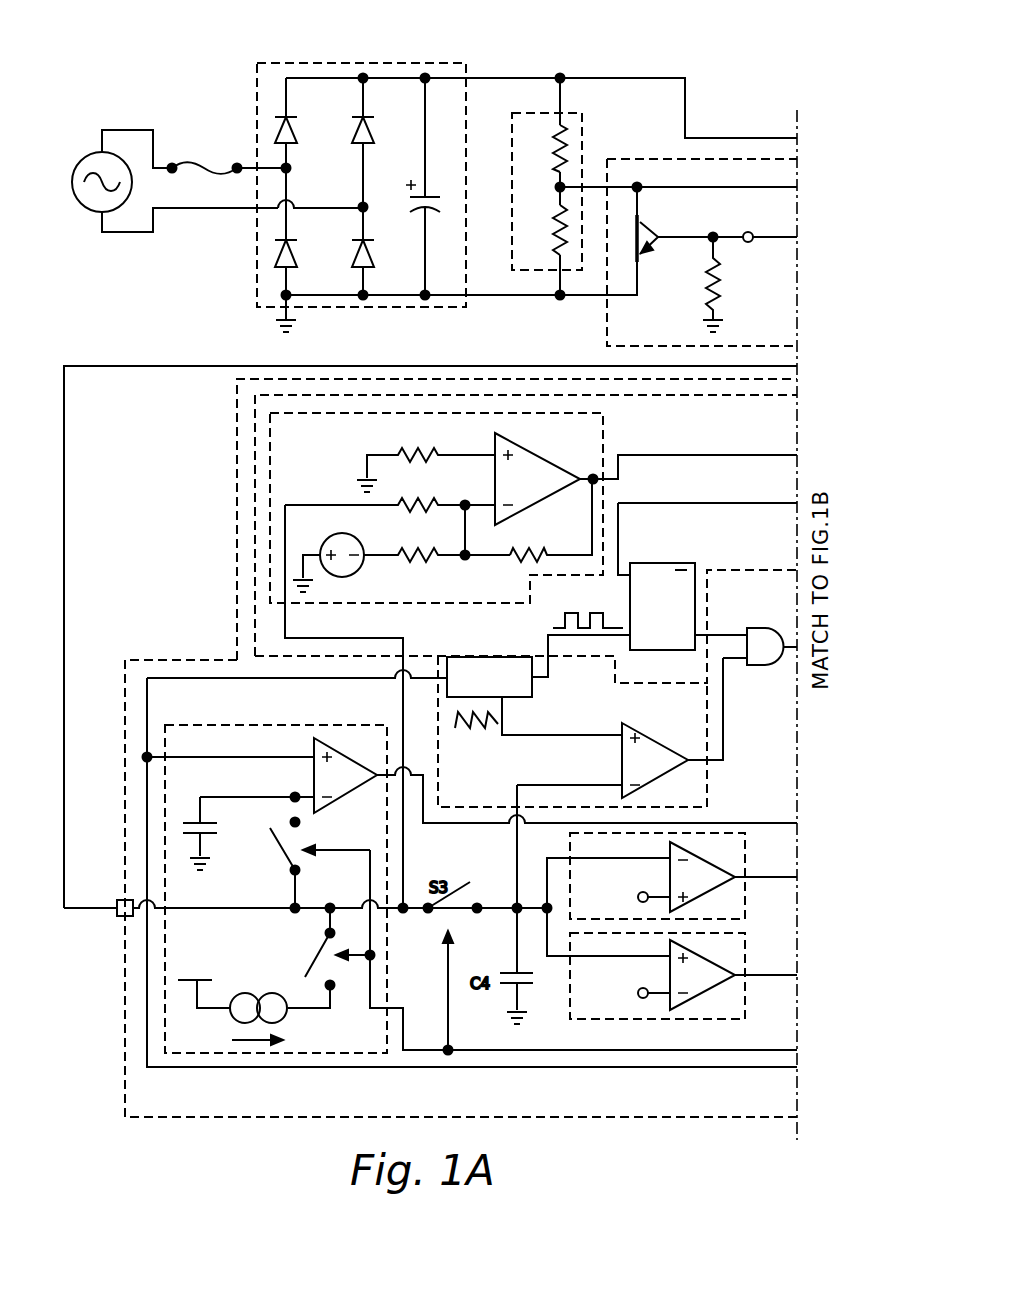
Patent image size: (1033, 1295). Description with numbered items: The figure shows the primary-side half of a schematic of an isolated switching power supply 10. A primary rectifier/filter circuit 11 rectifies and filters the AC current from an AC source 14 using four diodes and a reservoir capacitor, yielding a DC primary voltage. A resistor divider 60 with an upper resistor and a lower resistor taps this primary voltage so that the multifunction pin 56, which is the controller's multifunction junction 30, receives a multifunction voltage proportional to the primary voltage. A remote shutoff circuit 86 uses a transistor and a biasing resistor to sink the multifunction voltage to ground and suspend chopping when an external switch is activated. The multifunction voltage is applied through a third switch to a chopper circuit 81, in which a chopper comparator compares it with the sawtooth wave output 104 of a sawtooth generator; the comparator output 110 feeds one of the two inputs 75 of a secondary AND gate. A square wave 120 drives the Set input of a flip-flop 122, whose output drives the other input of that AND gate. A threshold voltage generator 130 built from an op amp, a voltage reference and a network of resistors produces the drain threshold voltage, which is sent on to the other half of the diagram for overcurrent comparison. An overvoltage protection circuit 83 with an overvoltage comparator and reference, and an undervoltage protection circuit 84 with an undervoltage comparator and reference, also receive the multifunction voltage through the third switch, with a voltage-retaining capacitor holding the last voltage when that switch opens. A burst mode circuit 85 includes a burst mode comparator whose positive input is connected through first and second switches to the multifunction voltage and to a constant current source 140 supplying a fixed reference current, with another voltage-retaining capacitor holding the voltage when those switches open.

The switching power supply 10 is at (146, 58).
The primary rectifier/filter circuit 11 is at (255, 102).
The AC source 14 is at (84, 159).
The resistor divider 60 is at (532, 112).
The remote shutoff circuit 86 is at (607, 318).
The threshold voltage generator 130 is at (603, 425).
The flip-flop 122 is at (662, 563).
The square wave 120 is at (600, 614).
The inputs of secondary AND gate A2 75 is at (728, 636).
The output of chopper comparator CR1 110 is at (698, 747).
The chopper circuit 81 is at (707, 779).
The sawtooth wave output 104 is at (470, 722).
The burst mode circuit 85 is at (229, 725).
The overvoltage protection circuit 83 is at (745, 861).
The undervoltage protection circuit 84 is at (745, 959).
The constant current source 140 is at (282, 992).
The multifunction junction 30 is at (119, 920).
The multifunction pin 56 is at (125, 908).